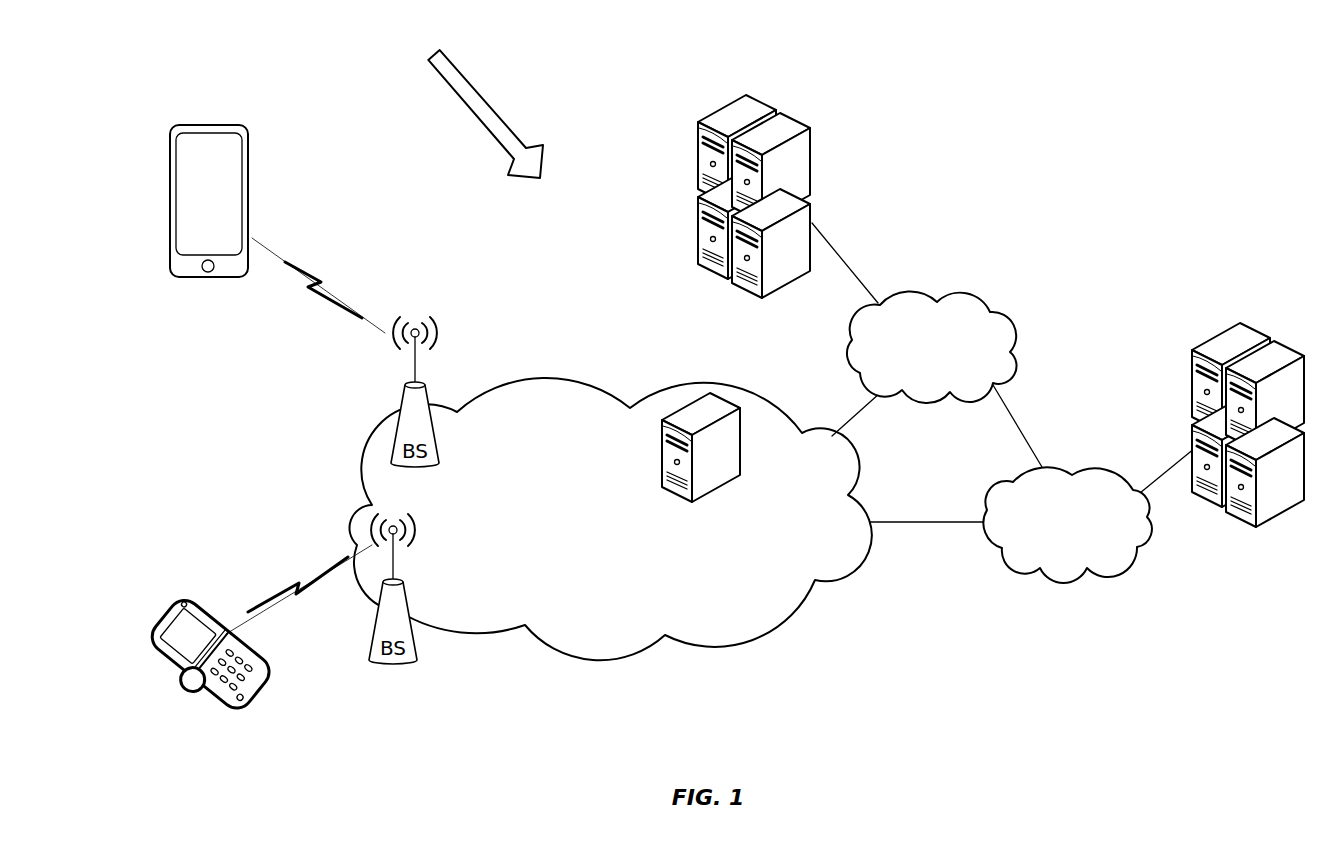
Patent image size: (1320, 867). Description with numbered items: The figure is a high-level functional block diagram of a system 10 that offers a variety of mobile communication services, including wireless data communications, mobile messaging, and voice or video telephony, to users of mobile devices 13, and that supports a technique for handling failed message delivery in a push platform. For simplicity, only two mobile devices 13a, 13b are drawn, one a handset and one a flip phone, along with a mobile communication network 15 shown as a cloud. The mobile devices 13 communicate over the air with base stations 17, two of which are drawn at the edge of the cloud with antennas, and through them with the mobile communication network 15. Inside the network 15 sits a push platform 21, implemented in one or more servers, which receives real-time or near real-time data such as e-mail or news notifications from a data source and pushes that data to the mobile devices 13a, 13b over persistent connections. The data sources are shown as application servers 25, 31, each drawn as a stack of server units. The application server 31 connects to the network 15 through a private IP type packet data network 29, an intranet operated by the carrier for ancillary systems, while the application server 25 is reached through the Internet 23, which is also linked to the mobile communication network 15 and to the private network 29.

The system 10 is at (474, 105).
The mobile devices 13 is at (155, 517).
The mobile device 13a is at (152, 620).
The mobile device 13b is at (170, 178).
The mobile communication network 15 is at (492, 388).
The base stations 17 is at (400, 410).
The push platform 21 is at (745, 408).
The Internet 23 is at (1006, 573).
The application server 25 is at (1192, 425).
The private IP type packet data network 29 is at (1018, 361).
The application server 31 is at (812, 146).